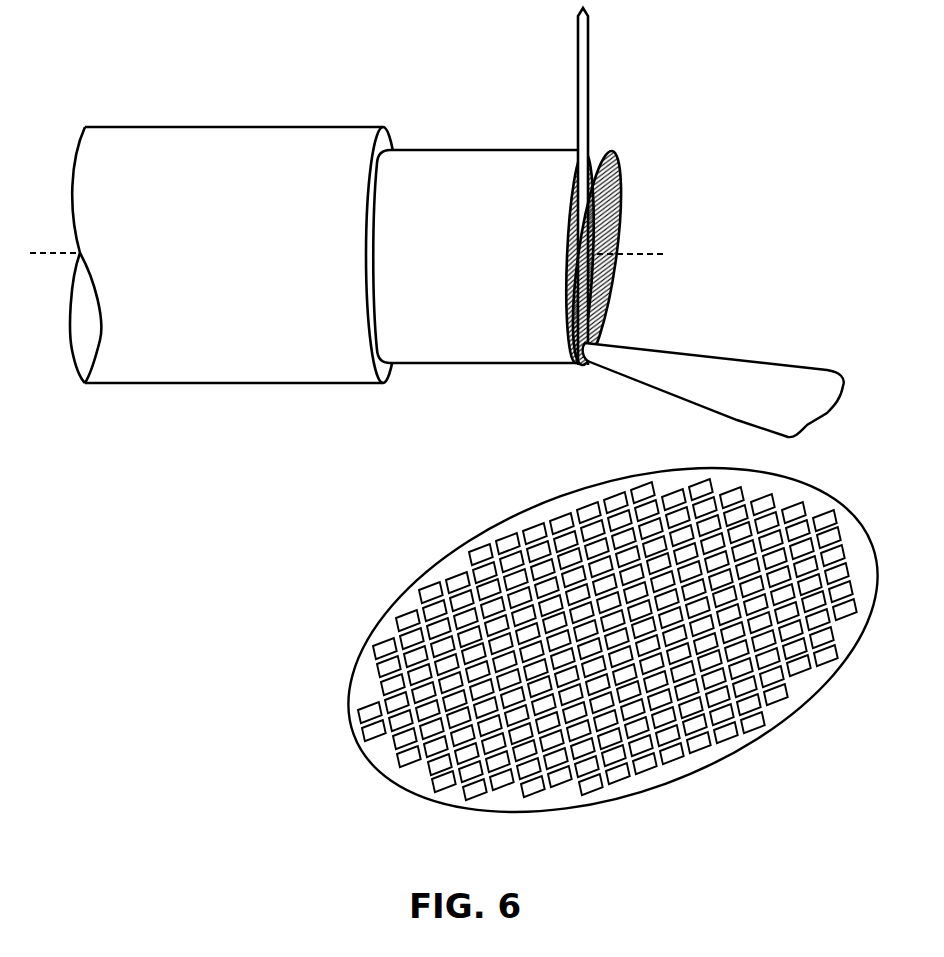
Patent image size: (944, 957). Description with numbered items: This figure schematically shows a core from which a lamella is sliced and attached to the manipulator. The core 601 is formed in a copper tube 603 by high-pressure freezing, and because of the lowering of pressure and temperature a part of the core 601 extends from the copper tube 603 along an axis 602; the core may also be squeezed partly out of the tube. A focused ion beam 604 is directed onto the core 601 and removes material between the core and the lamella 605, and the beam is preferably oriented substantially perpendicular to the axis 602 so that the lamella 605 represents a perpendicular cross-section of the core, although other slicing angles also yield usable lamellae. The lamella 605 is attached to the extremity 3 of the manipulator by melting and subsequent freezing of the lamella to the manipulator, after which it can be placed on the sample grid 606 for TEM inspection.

The extremity of the manipulator 3 is at (693, 392).
The core 601 is at (470, 222).
The axis 602 is at (48, 250).
The copper tube 603 is at (258, 200).
The focused ion beam 604 is at (583, 53).
The lamella 605 is at (594, 188).
The sample grid 606 is at (470, 557).